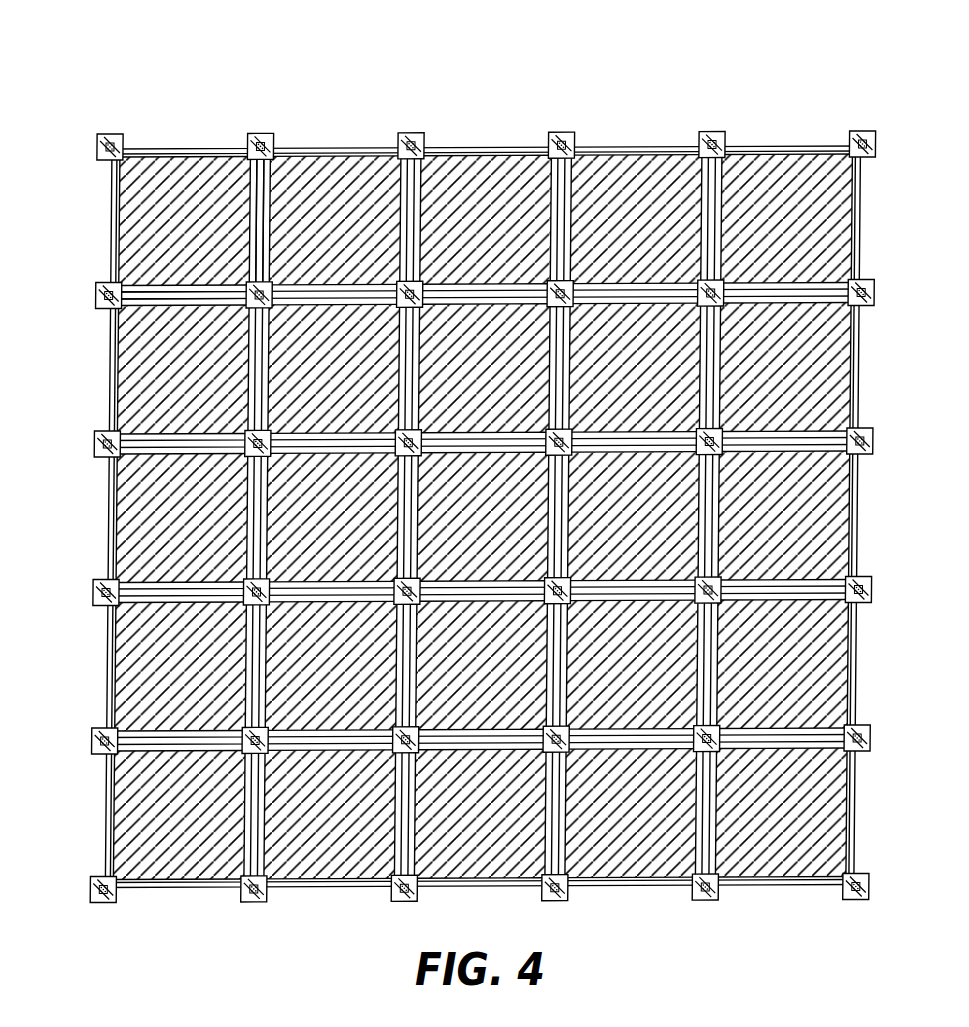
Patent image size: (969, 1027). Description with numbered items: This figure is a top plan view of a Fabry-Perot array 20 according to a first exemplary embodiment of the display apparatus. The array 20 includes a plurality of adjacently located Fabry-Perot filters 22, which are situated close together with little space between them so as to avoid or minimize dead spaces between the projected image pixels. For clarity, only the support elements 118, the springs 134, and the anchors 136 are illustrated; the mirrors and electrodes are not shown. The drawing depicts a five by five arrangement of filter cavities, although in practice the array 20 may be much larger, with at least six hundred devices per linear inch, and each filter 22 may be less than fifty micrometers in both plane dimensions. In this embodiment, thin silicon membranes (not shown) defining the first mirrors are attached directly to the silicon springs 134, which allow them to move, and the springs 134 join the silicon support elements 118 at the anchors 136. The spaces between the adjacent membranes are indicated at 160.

The array 20 is at (484, 513).
The Fabry-Perot filter 22 is at (145, 210).
The support element 118 is at (110, 643).
The spring 134 is at (165, 149).
The anchor 136 is at (104, 134).
The space between membranes 160 is at (251, 185).